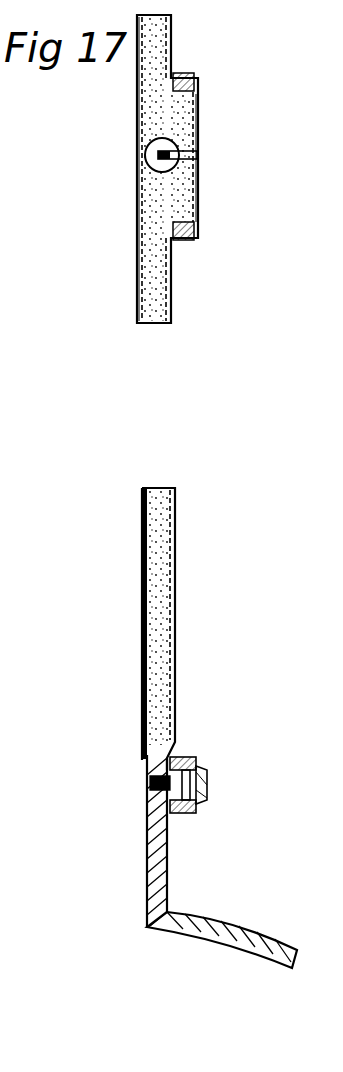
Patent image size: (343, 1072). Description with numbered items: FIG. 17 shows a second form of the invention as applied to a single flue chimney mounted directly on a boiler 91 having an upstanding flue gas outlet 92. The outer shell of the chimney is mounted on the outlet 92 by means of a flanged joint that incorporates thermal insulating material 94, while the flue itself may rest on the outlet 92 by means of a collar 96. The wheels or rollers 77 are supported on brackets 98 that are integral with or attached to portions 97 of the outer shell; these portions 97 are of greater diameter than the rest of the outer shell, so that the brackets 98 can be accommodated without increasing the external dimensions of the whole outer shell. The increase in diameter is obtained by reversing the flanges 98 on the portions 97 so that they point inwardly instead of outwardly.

The wheels or rollers 77 is at (156, 146).
The boiler 91 is at (237, 930).
The flue gas outlet 92 is at (168, 853).
The thermal insulating material 94 is at (208, 783).
The collar 96 is at (152, 786).
The portions of the outer shell 97 is at (200, 118).
The brackets 98 is at (200, 165).